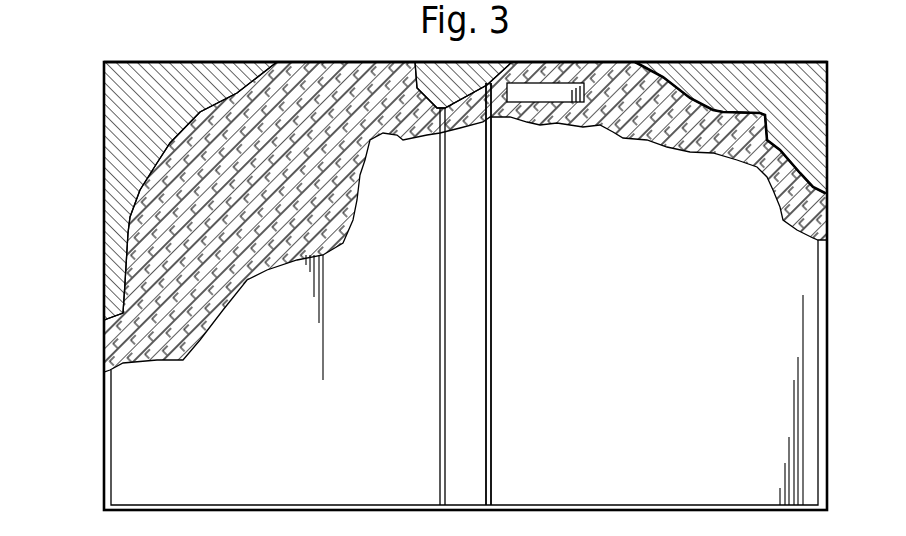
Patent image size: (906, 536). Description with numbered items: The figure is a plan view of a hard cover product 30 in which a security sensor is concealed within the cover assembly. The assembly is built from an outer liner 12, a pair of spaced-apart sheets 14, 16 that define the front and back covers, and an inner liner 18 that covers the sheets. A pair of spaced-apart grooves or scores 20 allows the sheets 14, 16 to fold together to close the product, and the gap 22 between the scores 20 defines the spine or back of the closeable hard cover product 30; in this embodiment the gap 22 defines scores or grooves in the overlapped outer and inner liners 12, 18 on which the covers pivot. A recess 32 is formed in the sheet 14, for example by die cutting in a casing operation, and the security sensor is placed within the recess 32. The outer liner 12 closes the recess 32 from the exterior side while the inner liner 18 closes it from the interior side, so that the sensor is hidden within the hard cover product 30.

The outer liner 12 is at (140, 121).
The sheet 14 is at (713, 108).
The sheet 16 is at (153, 288).
The inner liner 18 is at (165, 428).
The scores 20 is at (440, 423).
The gap 22 is at (465, 350).
The hard cover product 30 is at (687, 62).
The recess 32 is at (560, 92).